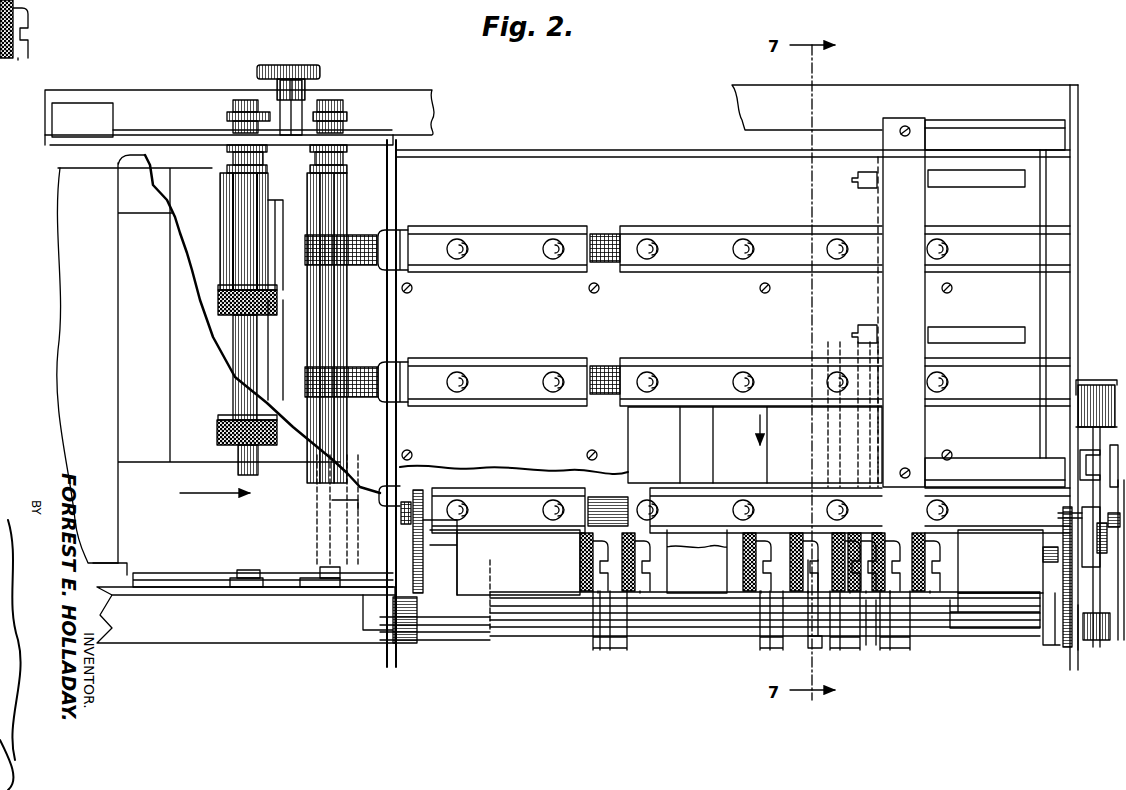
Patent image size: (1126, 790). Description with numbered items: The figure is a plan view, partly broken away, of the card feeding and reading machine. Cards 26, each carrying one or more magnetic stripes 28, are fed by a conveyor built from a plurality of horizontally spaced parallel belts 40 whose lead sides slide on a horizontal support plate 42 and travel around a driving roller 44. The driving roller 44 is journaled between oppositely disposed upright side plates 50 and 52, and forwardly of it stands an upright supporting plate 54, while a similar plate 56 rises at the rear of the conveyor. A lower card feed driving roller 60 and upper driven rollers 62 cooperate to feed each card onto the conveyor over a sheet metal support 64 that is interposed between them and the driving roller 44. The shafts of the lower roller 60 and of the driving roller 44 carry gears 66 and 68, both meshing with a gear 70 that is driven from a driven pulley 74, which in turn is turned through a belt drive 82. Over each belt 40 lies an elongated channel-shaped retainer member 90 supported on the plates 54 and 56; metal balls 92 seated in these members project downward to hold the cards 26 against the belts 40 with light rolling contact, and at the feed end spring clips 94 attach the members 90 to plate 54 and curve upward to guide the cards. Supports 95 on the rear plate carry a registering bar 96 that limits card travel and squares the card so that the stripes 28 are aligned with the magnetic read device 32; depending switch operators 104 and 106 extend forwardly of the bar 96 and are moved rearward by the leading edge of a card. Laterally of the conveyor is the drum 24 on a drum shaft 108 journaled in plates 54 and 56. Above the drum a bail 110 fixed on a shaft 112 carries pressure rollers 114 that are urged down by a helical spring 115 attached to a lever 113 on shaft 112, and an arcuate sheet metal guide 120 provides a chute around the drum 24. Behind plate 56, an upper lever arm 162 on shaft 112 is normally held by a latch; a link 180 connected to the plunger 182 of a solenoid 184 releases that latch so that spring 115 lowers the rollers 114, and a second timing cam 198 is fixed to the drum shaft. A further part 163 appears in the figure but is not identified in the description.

The drum 24 is at (490, 606).
The card 26 is at (120, 478).
The magnetic stripe 28 is at (320, 520).
The magnetic read device 32 is at (822, 572).
The belt 40 is at (605, 235).
The horizontal support plate 42 is at (612, 153).
The driving roller 44 is at (345, 212).
The upright side plate 50 is at (292, 590).
The upright side plate 52 is at (186, 134).
The upright supporting plate 54 is at (398, 336).
The rear plate 56 is at (1078, 312).
The lower card feed driving roller 60 is at (272, 392).
The upper driven roller 62 is at (275, 295).
The sheet metal support 64 is at (275, 347).
The gear 66 is at (235, 112).
The gear 68 is at (352, 114).
The gear 70 is at (293, 137).
The driven pulley 74 is at (275, 65).
The belt drive 82 is at (318, 72).
The retainer member 90 is at (700, 226).
The metal ball 92 is at (544, 250).
The spring clip 94 is at (405, 238).
The support 95 is at (1008, 126).
The registering bar 96 is at (918, 122).
The switch operator 104 is at (858, 344).
The switch operator 106 is at (857, 178).
The drum shaft 108 is at (455, 575).
The bail 110 is at (875, 645).
The shaft 112 is at (495, 640).
The lever 113 is at (1055, 618).
The pressure roller 114 is at (752, 533).
The helical spring 115 is at (1045, 573).
The arcuate sheet metal guide 120 is at (975, 615).
The upper lever arm 162 is at (1093, 622).
The gear 163 is at (1100, 512).
The link 180 is at (1078, 472).
The plunger 182 is at (1085, 434).
The solenoid 184 is at (1098, 385).
The second timing cam 198 is at (1118, 600).